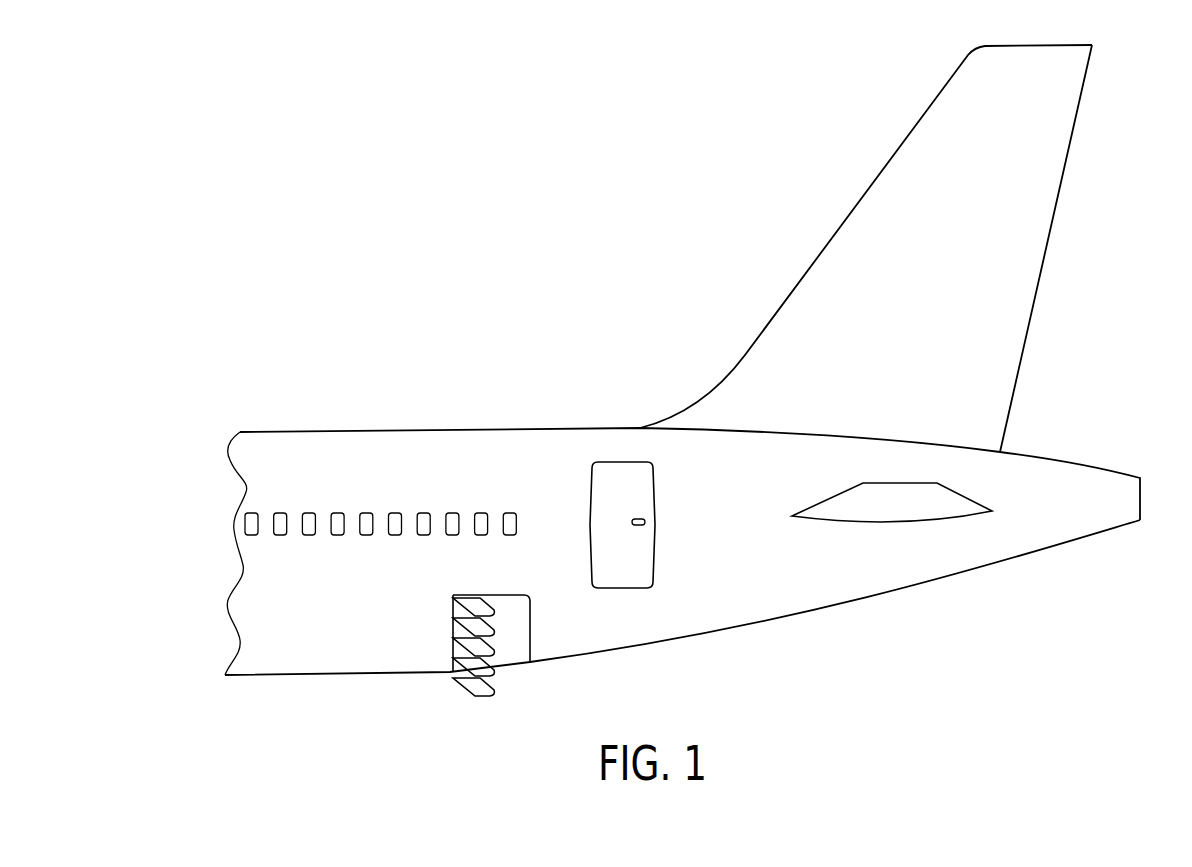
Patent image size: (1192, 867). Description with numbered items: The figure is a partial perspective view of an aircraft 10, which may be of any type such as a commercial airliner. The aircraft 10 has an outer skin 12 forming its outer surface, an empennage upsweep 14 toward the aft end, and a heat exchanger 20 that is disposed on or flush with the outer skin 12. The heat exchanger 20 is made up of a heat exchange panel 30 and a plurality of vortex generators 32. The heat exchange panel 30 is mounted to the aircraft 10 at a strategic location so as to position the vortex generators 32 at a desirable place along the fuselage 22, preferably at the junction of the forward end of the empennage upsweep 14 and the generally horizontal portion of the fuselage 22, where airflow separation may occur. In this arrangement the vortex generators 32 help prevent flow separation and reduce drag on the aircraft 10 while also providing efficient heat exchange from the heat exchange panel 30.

The aircraft 10 is at (1114, 128).
The outer skin 12 is at (253, 460).
The empennage upsweep 14 is at (683, 643).
The heat exchanger 20 is at (495, 648).
The fuselage 22 is at (305, 610).
The heat exchange panel 30 is at (513, 605).
The vortex generators 32 is at (472, 595).